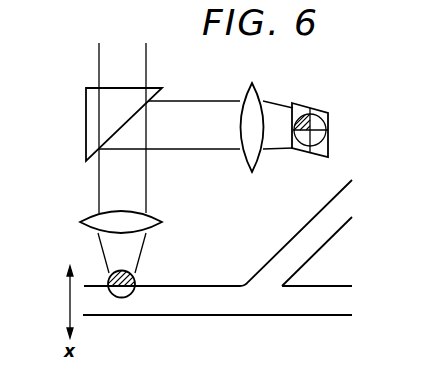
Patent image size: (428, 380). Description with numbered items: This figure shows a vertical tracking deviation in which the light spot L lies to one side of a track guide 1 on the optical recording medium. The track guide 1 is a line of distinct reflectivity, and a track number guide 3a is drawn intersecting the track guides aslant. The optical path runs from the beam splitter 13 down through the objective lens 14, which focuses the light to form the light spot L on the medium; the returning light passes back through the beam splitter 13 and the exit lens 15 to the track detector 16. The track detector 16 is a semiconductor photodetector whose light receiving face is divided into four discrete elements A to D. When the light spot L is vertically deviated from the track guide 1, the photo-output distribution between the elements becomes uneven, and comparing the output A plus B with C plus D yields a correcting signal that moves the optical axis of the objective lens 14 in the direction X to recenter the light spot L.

The track guide 1 is at (178, 303).
The track number guide 3a is at (318, 238).
The beam splitter 13 is at (86, 108).
The objective lens 14 is at (163, 222).
The exit lens 15 is at (246, 96).
The track detector 16 is at (312, 108).
The light spot L is at (130, 271).